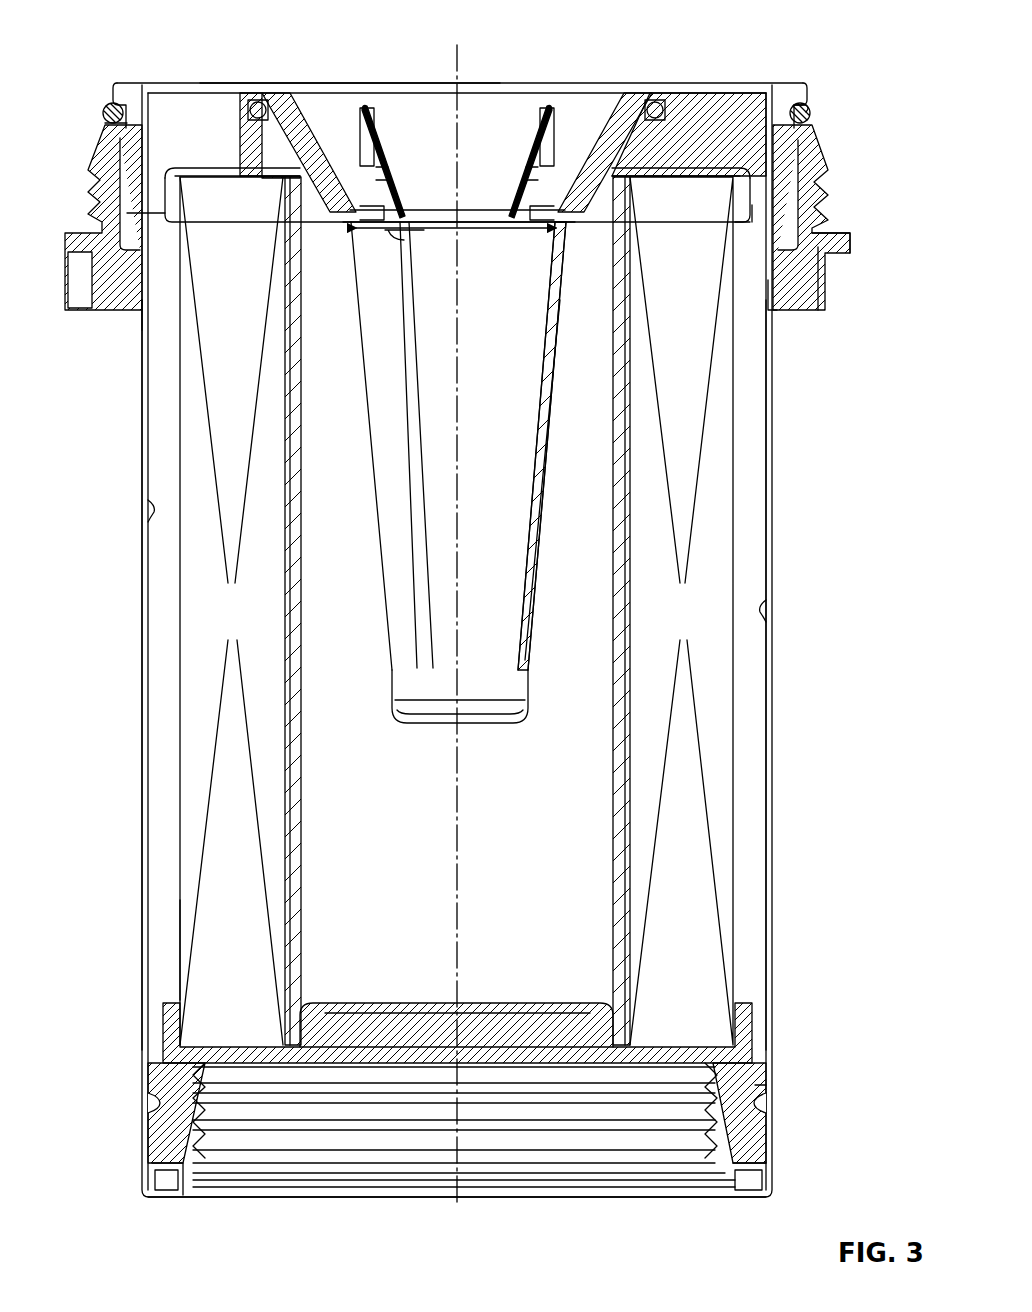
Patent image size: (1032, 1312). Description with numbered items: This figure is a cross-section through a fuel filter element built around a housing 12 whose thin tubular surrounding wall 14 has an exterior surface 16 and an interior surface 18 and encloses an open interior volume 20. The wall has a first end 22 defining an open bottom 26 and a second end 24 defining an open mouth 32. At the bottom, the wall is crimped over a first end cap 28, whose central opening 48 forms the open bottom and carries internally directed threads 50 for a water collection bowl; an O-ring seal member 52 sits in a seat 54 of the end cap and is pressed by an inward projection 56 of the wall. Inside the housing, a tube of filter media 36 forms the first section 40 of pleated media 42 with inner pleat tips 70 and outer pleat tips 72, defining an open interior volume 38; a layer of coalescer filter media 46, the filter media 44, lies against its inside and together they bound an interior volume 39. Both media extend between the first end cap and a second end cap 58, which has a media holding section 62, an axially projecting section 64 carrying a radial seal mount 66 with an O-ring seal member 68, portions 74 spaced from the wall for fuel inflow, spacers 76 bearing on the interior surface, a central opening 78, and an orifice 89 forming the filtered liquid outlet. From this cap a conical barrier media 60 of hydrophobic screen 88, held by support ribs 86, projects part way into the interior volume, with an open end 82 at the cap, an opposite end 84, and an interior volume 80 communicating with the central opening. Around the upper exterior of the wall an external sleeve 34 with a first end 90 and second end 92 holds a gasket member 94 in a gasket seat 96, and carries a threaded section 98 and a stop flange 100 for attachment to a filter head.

The housing 12 is at (142, 382).
The surrounding wall 14 is at (772, 666).
The exterior surface 16 is at (772, 560).
The interior surface 18 is at (766, 614).
The open interior volume 20 is at (148, 510).
The first end 22 is at (750, 1200).
The second end 24 is at (785, 83).
The open bottom 26 is at (222, 1198).
The first end cap 28 is at (757, 1142).
The open mouth 32 is at (175, 83).
The external sleeve 34 is at (815, 150).
The filter media 36 is at (160, 587).
The open interior volume 38 is at (283, 800).
The interior volume 39 is at (611, 940).
The first section 40 is at (200, 627).
The pleated media 42 is at (730, 758).
The filter media 44 is at (611, 836).
The coalescer filter media 46 is at (299, 886).
The central opening 48 is at (410, 1002).
The threads 50 is at (623, 1137).
The seal member 52 is at (150, 1102).
The seat 54 is at (772, 1088).
The projection 56 is at (768, 1104).
The second end cap 58 is at (705, 173).
The barrier media 60 is at (368, 460).
The media holding section 62 is at (195, 170).
The axially projecting section 64 is at (278, 100).
The radial seal mount 66 is at (255, 103).
The seal member 68 is at (662, 108).
The inner pleat tips 70 is at (290, 734).
The outer pleat tips 72 is at (180, 450).
The portions 74 is at (162, 215).
The spacers 76 is at (753, 213).
The central opening 78 is at (493, 178).
The interior volume 80 is at (530, 550).
The open end 82 is at (418, 217).
The opposite end 84 is at (497, 725).
The support ribs 86 is at (425, 338).
The hydrophobic screen 88 is at (532, 634).
The second end cap orifice 89 is at (480, 232).
The first end 90 is at (808, 312).
The second end 92 is at (800, 97).
The gasket member 94 is at (103, 112).
The gasket seat 96 is at (812, 108).
The threaded section 98 is at (90, 172).
The stop flange 100 is at (851, 247).